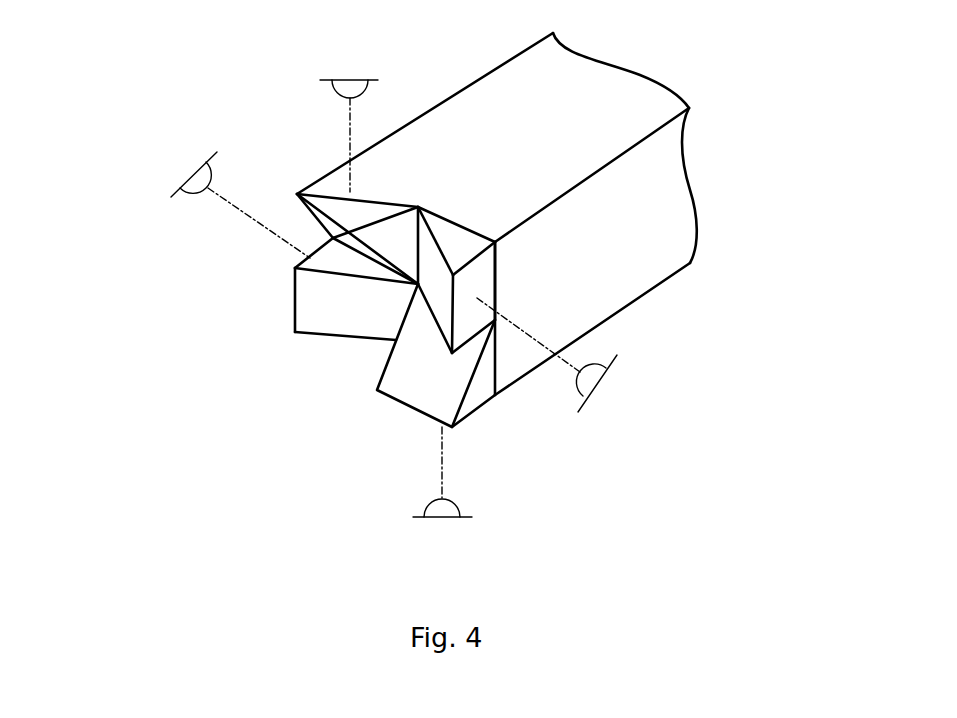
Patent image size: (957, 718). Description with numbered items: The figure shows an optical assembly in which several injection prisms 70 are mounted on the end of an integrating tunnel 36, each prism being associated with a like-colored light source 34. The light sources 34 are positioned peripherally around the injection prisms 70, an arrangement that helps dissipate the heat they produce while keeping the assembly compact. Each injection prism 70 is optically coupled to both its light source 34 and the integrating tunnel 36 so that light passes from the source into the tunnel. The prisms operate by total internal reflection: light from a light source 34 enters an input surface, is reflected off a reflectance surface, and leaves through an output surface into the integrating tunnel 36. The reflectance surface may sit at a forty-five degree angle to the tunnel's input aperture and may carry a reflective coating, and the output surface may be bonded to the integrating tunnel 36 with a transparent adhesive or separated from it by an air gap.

The integrating tunnel 36 is at (579, 107).
The injection prisms 70 is at (323, 173).
The light sources 34 is at (347, 76).